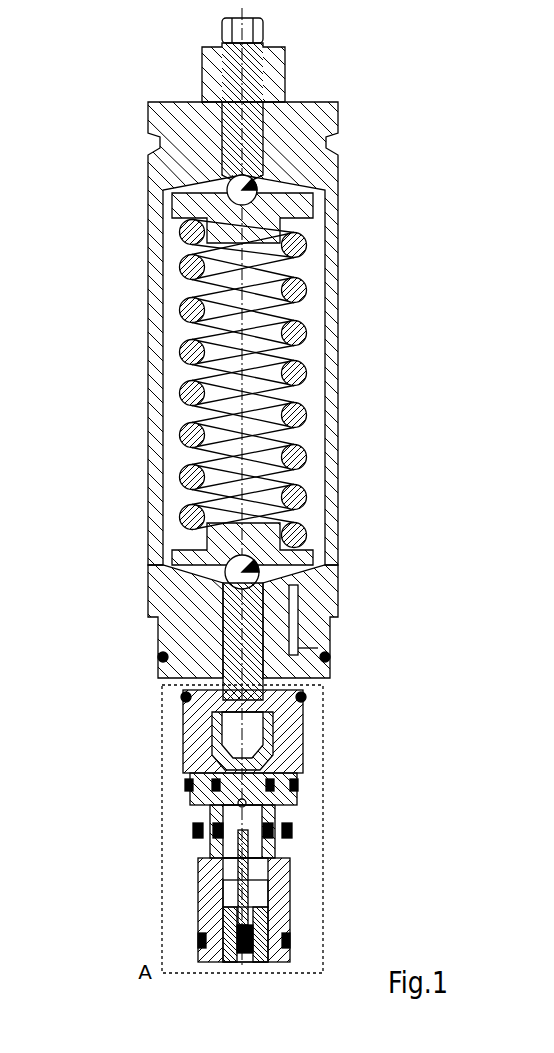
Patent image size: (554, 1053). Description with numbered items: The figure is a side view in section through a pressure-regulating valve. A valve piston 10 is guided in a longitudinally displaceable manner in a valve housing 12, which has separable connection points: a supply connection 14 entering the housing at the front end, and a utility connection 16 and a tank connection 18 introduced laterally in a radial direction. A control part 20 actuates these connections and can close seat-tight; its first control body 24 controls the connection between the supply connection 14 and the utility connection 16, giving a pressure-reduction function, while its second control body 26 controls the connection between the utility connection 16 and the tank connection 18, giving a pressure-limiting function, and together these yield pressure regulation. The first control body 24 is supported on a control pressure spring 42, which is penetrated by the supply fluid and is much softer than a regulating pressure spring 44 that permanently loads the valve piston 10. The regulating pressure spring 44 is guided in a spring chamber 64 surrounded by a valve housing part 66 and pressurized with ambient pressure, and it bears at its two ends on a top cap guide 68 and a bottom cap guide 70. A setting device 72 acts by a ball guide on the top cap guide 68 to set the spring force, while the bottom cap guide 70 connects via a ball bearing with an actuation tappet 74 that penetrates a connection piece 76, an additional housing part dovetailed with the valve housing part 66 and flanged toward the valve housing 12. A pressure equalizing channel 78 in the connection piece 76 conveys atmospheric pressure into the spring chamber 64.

The valve piston 10 is at (290, 762).
The valve housing 12 is at (287, 892).
The supply connection 14 is at (270, 960).
The utility connection 16 is at (287, 877).
The tank connection 18 is at (290, 800).
The control part 20 is at (240, 905).
The first control body 24 is at (253, 912).
The second control body 26 is at (197, 850).
The control pressure spring 42 is at (240, 960).
The regulating pressure spring 44 is at (310, 362).
The spring chamber 64 is at (308, 267).
The valve housing part 66 is at (332, 424).
The top cap guide 68 is at (327, 188).
The bottom cap guide 70 is at (313, 547).
The setting device 72 is at (278, 58).
The actuation tappet 74 is at (255, 647).
The connection piece 76 is at (190, 633).
The pressure equalizing channel 78 is at (292, 598).